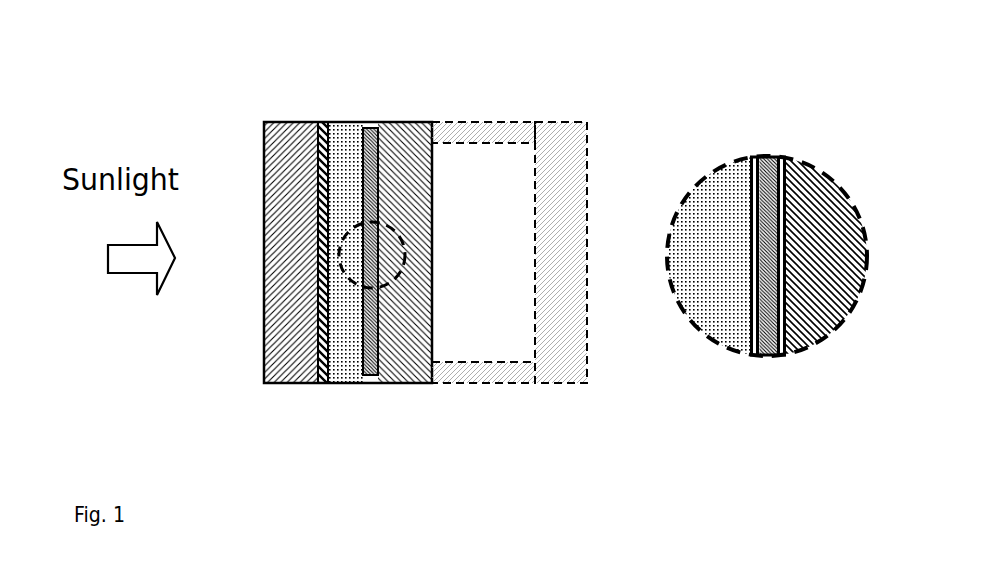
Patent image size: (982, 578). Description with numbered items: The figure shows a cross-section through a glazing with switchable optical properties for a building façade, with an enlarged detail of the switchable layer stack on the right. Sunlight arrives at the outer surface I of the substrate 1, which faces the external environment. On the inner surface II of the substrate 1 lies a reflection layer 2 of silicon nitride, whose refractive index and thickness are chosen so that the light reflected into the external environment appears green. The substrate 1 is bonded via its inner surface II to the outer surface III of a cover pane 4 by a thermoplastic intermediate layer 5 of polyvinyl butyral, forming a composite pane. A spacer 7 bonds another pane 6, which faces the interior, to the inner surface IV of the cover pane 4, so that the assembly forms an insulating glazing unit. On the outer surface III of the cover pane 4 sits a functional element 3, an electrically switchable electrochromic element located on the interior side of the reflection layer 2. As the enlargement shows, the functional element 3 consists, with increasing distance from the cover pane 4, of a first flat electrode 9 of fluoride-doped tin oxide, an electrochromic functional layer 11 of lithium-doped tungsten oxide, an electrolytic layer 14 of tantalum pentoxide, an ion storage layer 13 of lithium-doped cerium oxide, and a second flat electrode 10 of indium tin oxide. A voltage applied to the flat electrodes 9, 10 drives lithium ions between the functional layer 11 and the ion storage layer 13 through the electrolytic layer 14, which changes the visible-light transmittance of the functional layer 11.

The substrate 1 is at (279, 373).
The reflection layer 2 is at (320, 127).
The functional element 3 is at (369, 129).
The cover pane 4 is at (403, 372).
The thermoplastic intermediate layer 5 is at (332, 372).
The other pane 6 is at (553, 365).
The spacer 7 is at (517, 134).
The first flat electrode 9 is at (786, 156).
The second flat electrode 10 is at (752, 156).
The electrochromic functional layer 11 is at (778, 156).
The ion storage layer 13 is at (757, 156).
The electrolytic layer 14 is at (765, 156).
The outer surface of the substrate I is at (262, 343).
The inner surface of the substrate II is at (312, 297).
The outer surface of the cover pane III is at (385, 136).
The inner surface of the cover pane IV is at (438, 156).